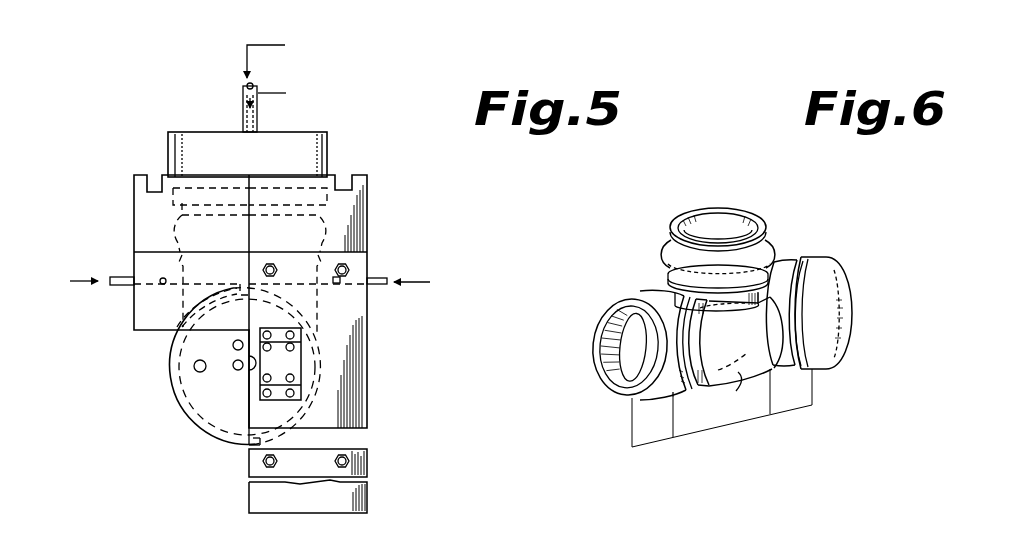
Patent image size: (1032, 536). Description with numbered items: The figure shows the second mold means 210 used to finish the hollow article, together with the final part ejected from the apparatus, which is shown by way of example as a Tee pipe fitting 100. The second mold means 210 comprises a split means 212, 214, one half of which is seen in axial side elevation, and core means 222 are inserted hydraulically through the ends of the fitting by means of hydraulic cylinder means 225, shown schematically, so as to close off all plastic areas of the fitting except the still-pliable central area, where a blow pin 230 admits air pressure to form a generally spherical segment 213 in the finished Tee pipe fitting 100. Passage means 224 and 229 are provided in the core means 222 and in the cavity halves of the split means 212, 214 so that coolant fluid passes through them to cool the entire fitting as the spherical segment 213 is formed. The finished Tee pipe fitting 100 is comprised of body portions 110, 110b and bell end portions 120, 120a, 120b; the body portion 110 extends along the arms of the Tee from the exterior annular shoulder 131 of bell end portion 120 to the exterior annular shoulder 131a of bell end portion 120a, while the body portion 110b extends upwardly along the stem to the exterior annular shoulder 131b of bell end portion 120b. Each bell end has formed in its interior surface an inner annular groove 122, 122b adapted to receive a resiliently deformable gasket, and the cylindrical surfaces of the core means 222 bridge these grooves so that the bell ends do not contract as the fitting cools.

In FIG. 5, the second mold means 210 is at (372, 187).
In FIG. 5, the split means 212 is at (357, 240).
In FIG. 5, the split means 214 is at (145, 215).
In FIG. 5, the core means 222 is at (330, 143).
In FIG. 5, the passage means 224 is at (252, 124).
In FIG. 5, the hydraulic cylinder means 225 is at (297, 355).
In FIG. 5, the passage means 229 is at (127, 293).
In FIG. 5, the blow pin 230 is at (240, 92).
In FIG. 6, the Tee pipe fitting 100 is at (774, 220).
In FIG. 6, the body portion 110 is at (718, 438).
In FIG. 6, the body portion 110b is at (640, 285).
In FIG. 6, the bell end portion 120 is at (655, 452).
In FIG. 6, the bell end portion 120a is at (791, 418).
In FIG. 6, the bell end portion 120b is at (657, 286).
In FIG. 6, the inner annular groove 122 is at (623, 338).
In FIG. 6, the inner annular groove 122b is at (713, 217).
In FIG. 6, the exterior annular shoulder 131 is at (656, 404).
In FIG. 6, the exterior annular shoulder 131a is at (839, 287).
In FIG. 6, the exterior annular shoulder 131b is at (777, 241).
In FIG. 6, the spherical segment 213 is at (745, 397).